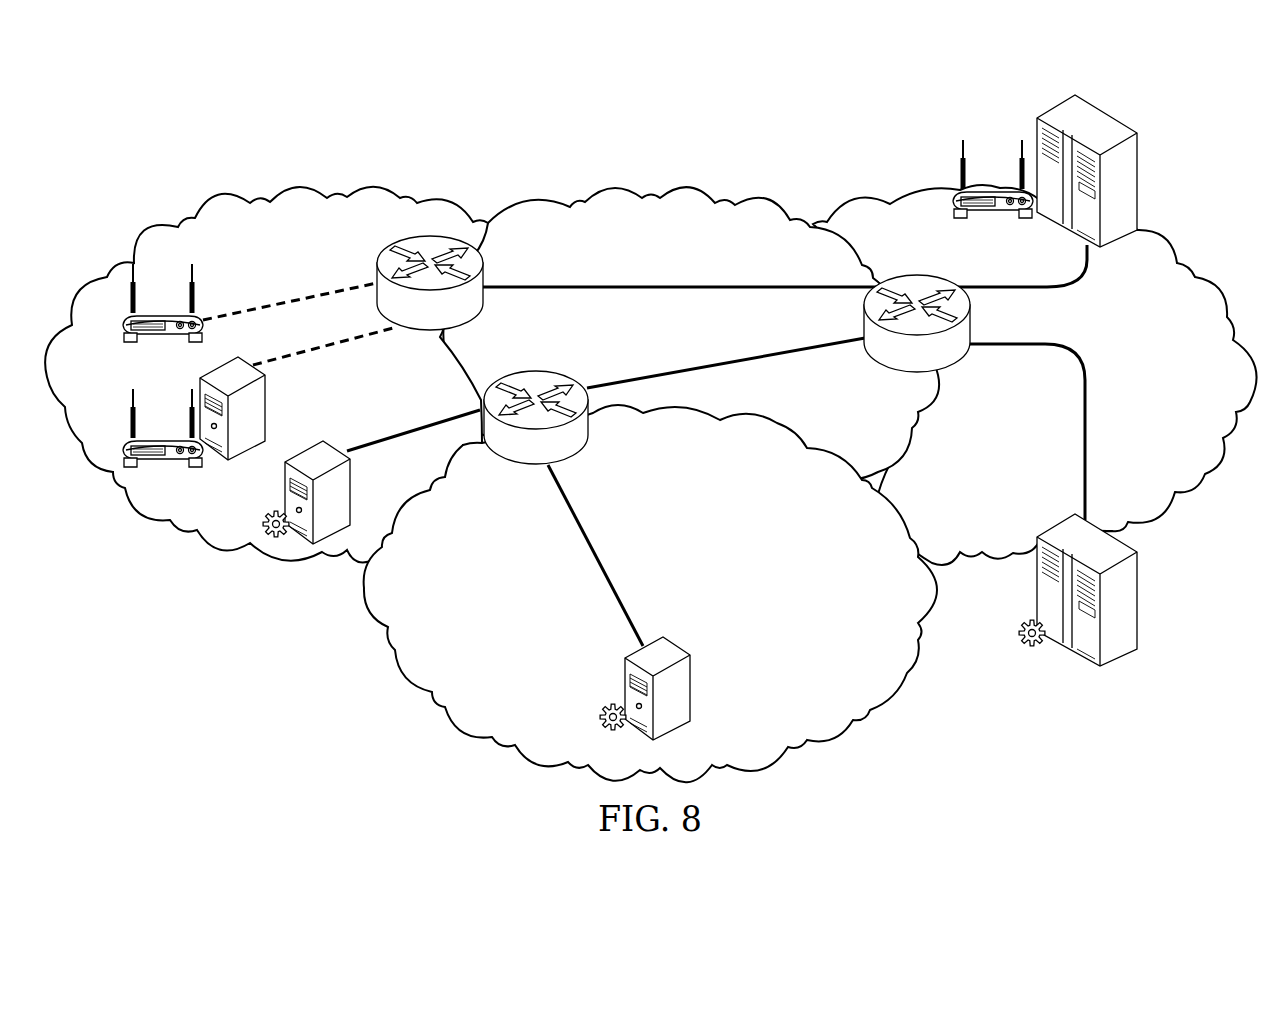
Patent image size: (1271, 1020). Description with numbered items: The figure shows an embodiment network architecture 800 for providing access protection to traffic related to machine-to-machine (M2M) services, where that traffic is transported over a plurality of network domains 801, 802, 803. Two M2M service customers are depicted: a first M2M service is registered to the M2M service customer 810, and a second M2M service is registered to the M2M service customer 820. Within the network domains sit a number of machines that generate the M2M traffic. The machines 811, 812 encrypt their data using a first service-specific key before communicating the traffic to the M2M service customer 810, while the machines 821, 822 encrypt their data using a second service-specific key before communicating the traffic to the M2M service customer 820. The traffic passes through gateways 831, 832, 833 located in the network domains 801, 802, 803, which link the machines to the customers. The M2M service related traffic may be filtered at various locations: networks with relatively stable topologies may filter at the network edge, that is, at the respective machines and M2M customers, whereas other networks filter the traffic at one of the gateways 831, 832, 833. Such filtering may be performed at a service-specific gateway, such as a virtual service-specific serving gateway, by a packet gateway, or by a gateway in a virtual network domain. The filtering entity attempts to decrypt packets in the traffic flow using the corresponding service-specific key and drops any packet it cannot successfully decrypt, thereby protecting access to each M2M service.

The network architecture 800 is at (650, 415).
The network domain 801 is at (844, 737).
The network domain 802 is at (215, 194).
The network domain 803 is at (652, 187).
The M2M service customer 810 is at (1138, 183).
The machine 811 is at (196, 272).
The machine 812 is at (130, 397).
The M2M service customer 820 is at (1138, 600).
The machine 821 is at (690, 683).
The machine 822 is at (283, 488).
The gateway 831 is at (541, 466).
The gateway 832 is at (392, 247).
The gateway 833 is at (942, 372).